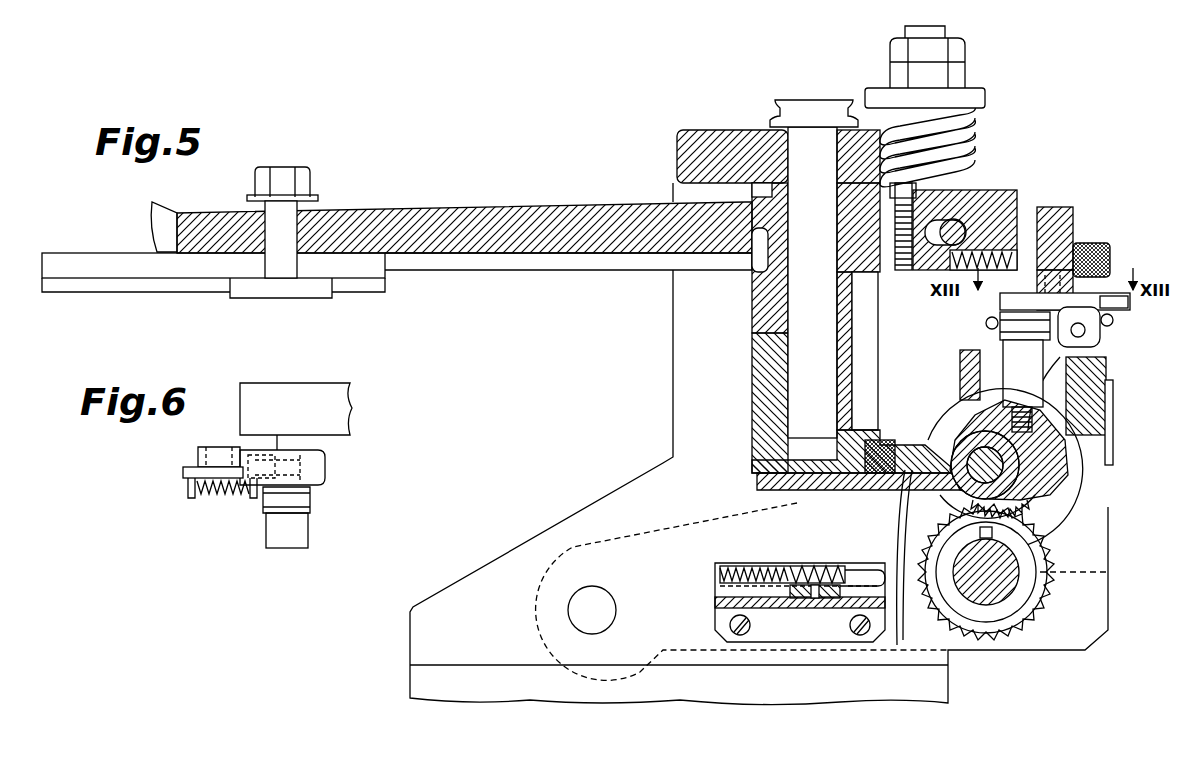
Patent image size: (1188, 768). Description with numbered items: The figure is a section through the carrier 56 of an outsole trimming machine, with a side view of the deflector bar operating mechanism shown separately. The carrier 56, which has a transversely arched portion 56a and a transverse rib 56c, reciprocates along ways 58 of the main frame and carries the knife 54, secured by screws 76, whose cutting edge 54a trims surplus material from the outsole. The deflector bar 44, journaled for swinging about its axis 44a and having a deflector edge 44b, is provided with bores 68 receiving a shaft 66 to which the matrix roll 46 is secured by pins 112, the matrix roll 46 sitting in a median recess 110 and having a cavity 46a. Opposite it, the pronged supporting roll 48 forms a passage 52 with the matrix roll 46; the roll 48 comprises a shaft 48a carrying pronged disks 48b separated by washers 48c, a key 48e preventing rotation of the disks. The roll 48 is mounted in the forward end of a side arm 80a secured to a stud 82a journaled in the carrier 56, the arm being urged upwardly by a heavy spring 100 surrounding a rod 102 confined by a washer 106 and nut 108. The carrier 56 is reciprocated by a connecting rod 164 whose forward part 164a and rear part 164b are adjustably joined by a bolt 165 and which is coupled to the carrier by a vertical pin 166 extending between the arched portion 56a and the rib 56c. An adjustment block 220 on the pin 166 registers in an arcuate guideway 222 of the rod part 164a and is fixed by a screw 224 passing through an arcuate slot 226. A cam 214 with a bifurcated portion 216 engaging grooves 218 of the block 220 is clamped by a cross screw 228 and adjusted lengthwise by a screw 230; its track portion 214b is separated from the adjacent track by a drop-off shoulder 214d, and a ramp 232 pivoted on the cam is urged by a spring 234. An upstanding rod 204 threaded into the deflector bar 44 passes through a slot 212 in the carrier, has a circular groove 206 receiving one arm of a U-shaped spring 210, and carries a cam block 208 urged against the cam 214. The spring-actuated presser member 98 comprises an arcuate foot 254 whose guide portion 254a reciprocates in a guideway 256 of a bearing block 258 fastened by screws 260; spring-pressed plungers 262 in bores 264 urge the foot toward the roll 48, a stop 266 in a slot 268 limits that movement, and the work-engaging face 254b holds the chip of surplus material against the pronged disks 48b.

In FIG. 5, the deflector bar 44 is at (1045, 468).
In FIG. 5, the axis of the deflector bar 44a is at (1040, 482).
In FIG. 5, the deflector edge 44b is at (1033, 497).
In FIG. 5, the matrix roll 46 is at (955, 470).
In FIG. 5, the cavity 46a is at (965, 445).
In FIG. 5, the pronged supporting roll 48 is at (1032, 637).
In FIG. 5, the shaft 48a is at (1010, 590).
In FIG. 5, the toothed or pronged disks 48b is at (1040, 582).
In FIG. 5, the washers 48c is at (995, 612).
In FIG. 5, the key 48e is at (998, 533).
In FIG. 5, the passage or opening 52 is at (975, 510).
In FIG. 5, the knife 54 is at (790, 500).
In FIG. 5, the cutting edge 54a is at (940, 590).
In FIG. 5, the carrier 56 is at (673, 323).
In FIG. 5, the transversely arched portion 56a is at (698, 140).
In FIG. 5, the transverse rib 56c is at (752, 395).
In FIG. 5, the ways 58 is at (450, 702).
In FIG. 5, the shaft 66 is at (1020, 422).
In FIG. 5, the bores 68 is at (962, 465).
In FIG. 5, the screws 76 is at (885, 425).
In FIG. 5, the side arm 80a is at (655, 530).
In FIG. 5, the stud 82a is at (614, 595).
In FIG. 5, the spring-actuated presser member 98 is at (893, 538).
In FIG. 5, the springs 100 is at (975, 125).
In FIG. 5, the rods 102 is at (975, 148).
In FIG. 5, the washers 106 is at (985, 90).
In FIG. 5, the nuts 108 is at (965, 75).
In FIG. 5, the median recess 110 is at (985, 420).
In FIG. 5, the pins 112 is at (1050, 405).
In FIG. 5, the connecting rod 164 is at (175, 214).
In FIG. 5, the forward part of the connecting rod 164a is at (437, 208).
In FIG. 5, the rear part of the connecting rod 164b is at (60, 258).
In FIG. 5, the bolt 165 is at (292, 214).
In FIG. 5, the vertical pin 166 is at (823, 224).
In FIG. 5, the upstanding rod 204 is at (1000, 346).
In FIG. 6, the upstanding rod 204 is at (278, 548).
In FIG. 5, the circular groove 206 is at (1025, 346).
In FIG. 6, the circular groove 206 is at (313, 503).
In FIG. 5, the cam block 208 is at (1095, 265).
In FIG. 6, the cam block 208 is at (315, 468).
In FIG. 5, the U-shaped spring 210 is at (986, 323).
In FIG. 5, the slot 212 is at (960, 360).
In FIG. 5, the cam 214 is at (1092, 335).
In FIG. 6, the cam 214 is at (250, 482).
In FIG. 5, the track portion 214b is at (1035, 290).
In FIG. 5, the drop-off shoulder 214d is at (1055, 285).
In FIG. 5, the bifurcated portion 216 is at (1045, 212).
In FIG. 6, the bifurcated portion 216 is at (350, 400).
In FIG. 5, the grooves 218 is at (1030, 190).
In FIG. 5, the adjustment block 220 is at (775, 180).
In FIG. 5, the arcuate guideway 222 is at (752, 265).
In FIG. 5, the screw 224 is at (905, 190).
In FIG. 5, the arcuate slot 226 is at (888, 272).
In FIG. 5, the cross screw 228 is at (968, 233).
In FIG. 5, the screw 230 is at (1085, 245).
In FIG. 5, the ramp 232 is at (1128, 303).
In FIG. 6, the ramp 232 is at (250, 465).
In FIG. 5, the spring 234 is at (1113, 321).
In FIG. 6, the spring 234 is at (220, 498).
In FIG. 5, the arcuate foot 254 is at (906, 488).
In FIG. 5, the guide portion 254a is at (760, 605).
In FIG. 5, the work-engaging face 254b is at (897, 540).
In FIG. 5, the guideway 256 is at (715, 612).
In FIG. 5, the bearing block 258 is at (735, 632).
In FIG. 5, the screws 260 is at (860, 636).
In FIG. 5, the spring-pressed plungers 262 is at (882, 588).
In FIG. 5, the bores 264 is at (778, 566).
In FIG. 5, the stop 266 is at (813, 602).
In FIG. 5, the slot 268 is at (820, 606).